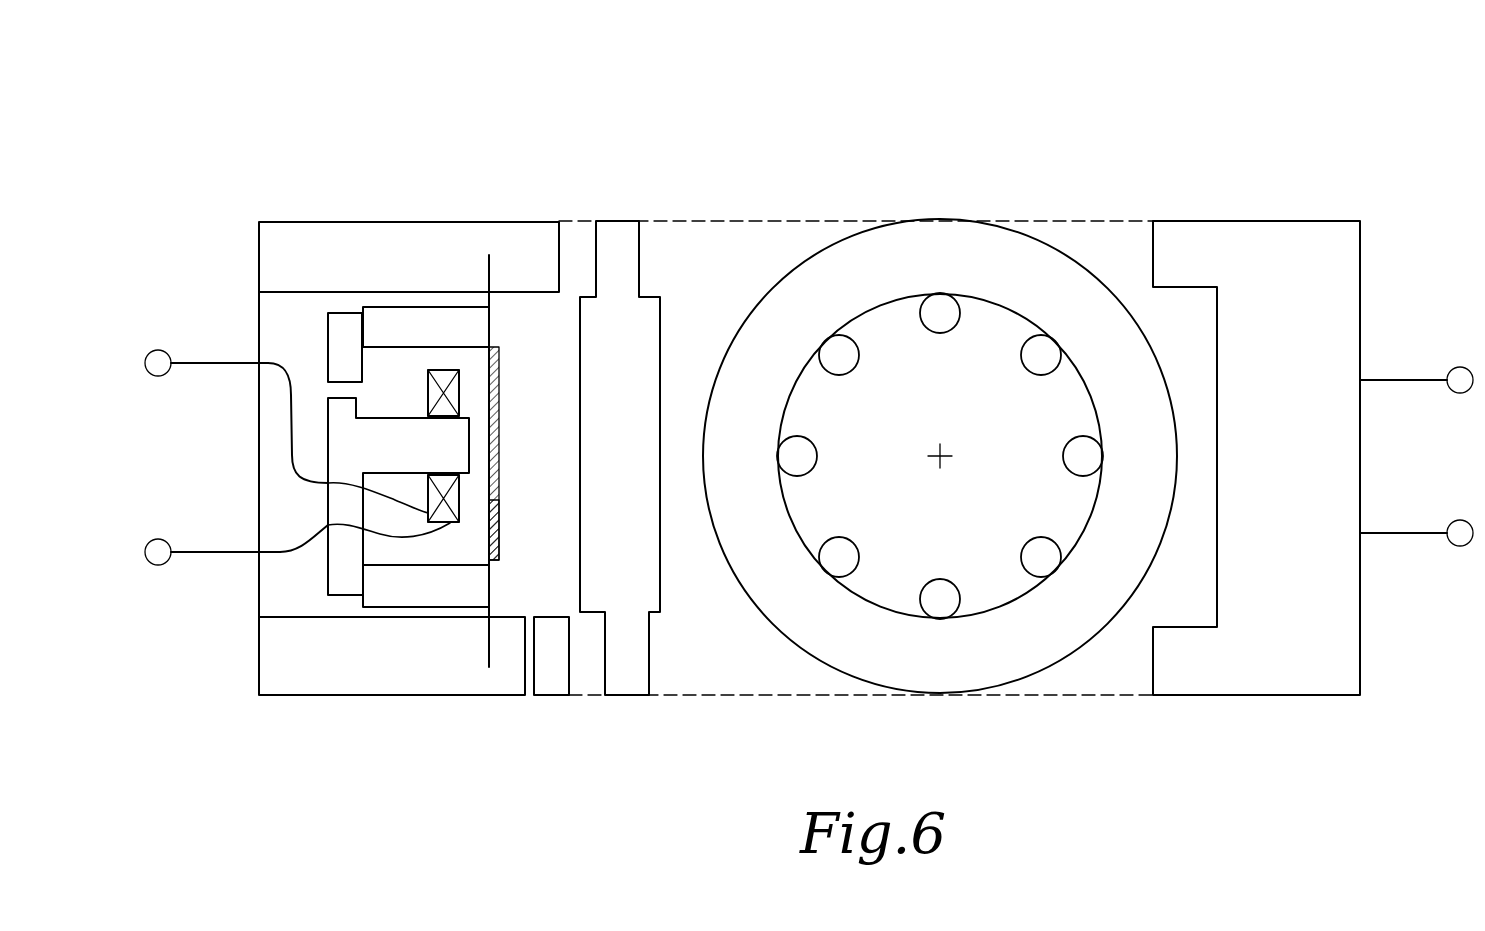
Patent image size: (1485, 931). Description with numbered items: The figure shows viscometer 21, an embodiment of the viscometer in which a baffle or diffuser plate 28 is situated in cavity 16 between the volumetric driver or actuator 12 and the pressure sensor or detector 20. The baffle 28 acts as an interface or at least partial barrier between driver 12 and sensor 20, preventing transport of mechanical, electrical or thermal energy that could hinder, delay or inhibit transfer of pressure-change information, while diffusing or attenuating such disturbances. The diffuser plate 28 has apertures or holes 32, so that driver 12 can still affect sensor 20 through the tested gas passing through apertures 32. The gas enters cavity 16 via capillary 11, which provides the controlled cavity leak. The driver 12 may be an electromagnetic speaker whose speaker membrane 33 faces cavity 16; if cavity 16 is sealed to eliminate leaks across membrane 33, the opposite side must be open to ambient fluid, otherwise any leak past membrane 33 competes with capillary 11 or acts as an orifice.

The viscometer 21 is at (860, 77).
The volumetric driver 12 is at (328, 412).
The cavity 16 is at (544, 450).
The speaker membrane 33 is at (499, 522).
The capillary 11 is at (528, 697).
The baffle or diffuser plate 28 is at (621, 221).
The apertures 32 is at (858, 365).
The pressure sensor 20 is at (1362, 220).